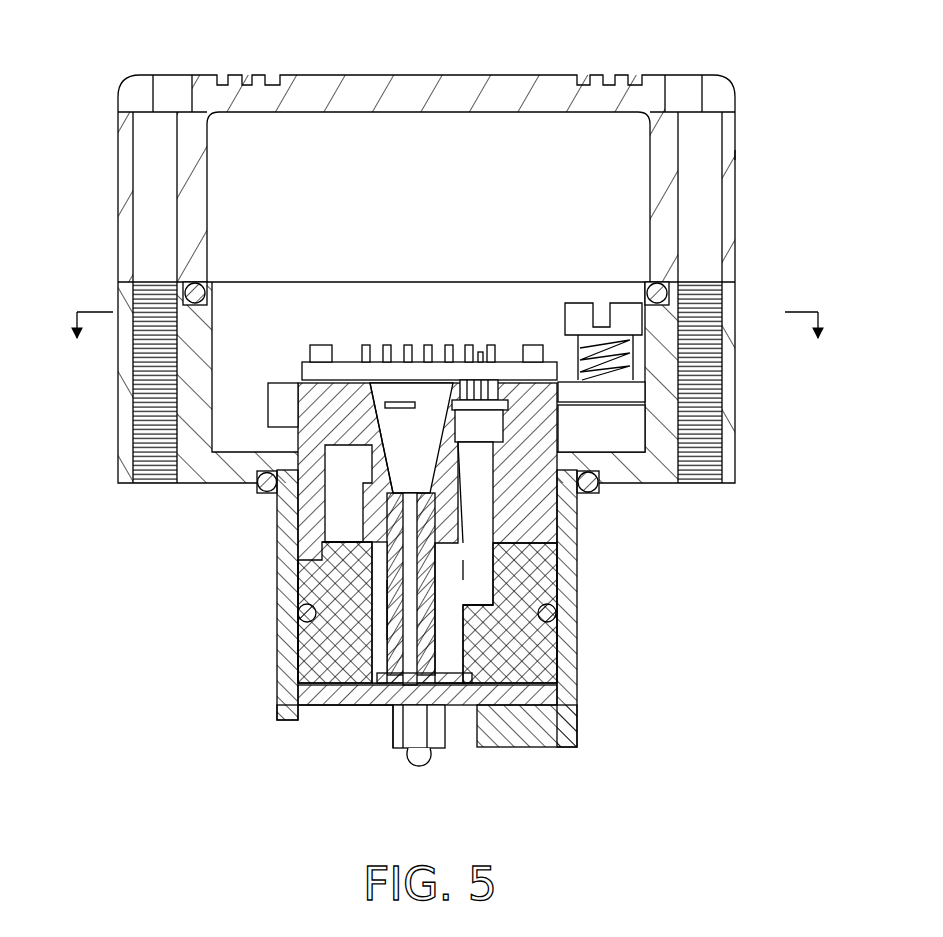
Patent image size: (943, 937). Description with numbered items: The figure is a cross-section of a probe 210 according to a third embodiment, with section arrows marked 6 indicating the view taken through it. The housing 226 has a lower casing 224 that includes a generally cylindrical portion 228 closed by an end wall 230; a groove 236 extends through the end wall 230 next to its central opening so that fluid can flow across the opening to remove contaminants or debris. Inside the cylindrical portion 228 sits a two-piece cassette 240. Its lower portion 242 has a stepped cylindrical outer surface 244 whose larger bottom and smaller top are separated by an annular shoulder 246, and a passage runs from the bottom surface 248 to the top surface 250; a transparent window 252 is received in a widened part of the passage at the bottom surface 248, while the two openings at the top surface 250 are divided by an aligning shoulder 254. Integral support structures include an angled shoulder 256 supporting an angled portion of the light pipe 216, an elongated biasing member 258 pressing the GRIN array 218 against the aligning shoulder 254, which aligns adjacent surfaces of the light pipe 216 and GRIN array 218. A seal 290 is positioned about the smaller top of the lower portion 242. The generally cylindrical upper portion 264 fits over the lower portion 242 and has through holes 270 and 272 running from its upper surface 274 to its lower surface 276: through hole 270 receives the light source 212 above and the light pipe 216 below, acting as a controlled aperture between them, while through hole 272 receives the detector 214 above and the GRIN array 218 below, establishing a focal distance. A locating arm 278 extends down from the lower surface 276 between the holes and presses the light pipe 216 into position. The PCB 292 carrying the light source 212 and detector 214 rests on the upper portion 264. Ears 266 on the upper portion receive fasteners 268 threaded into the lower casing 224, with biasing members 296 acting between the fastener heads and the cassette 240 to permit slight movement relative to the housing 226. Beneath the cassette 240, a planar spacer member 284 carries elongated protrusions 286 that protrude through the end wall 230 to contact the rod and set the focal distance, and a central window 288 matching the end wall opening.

The probe 210 is at (774, 160).
The light source 212 is at (490, 418).
The detector 214 is at (428, 392).
The light pipe 216 is at (486, 528).
The GRIN array 218 is at (303, 716).
The lower casing 224 is at (205, 488).
The housing 226 is at (108, 126).
The cylindrical portion 228 is at (282, 576).
The end wall 230 is at (357, 728).
The groove 236 is at (458, 727).
The cassette 240 is at (294, 660).
The lower portion of the cassette 242 is at (550, 658).
The stepped cylindrical outer surface 244 is at (348, 572).
The annular shoulder 246 is at (385, 645).
The bottom surface 248 is at (392, 708).
The top surface 250 is at (343, 540).
The window 252 is at (378, 686).
The aligning shoulder 254 is at (525, 548).
The angled shoulder 256 is at (470, 568).
The elongated biasing member 258 is at (385, 590).
The upper portion of the cassette 264 is at (316, 415).
The ears 266 is at (615, 390).
The fastener 268 is at (580, 312).
The through hole 270 is at (489, 460).
The through hole 272 is at (396, 440).
The upper surface 274 is at (340, 392).
The lower surface 276 is at (376, 550).
The locating arm 278 is at (492, 600).
The spacer member 284 is at (550, 698).
The elongated protrusion 286 is at (414, 766).
The window 288 is at (419, 699).
The seal 290 is at (552, 613).
The PCB 292 is at (372, 368).
The biasing member 296 is at (640, 350).
The section line 6 is at (447, 344).